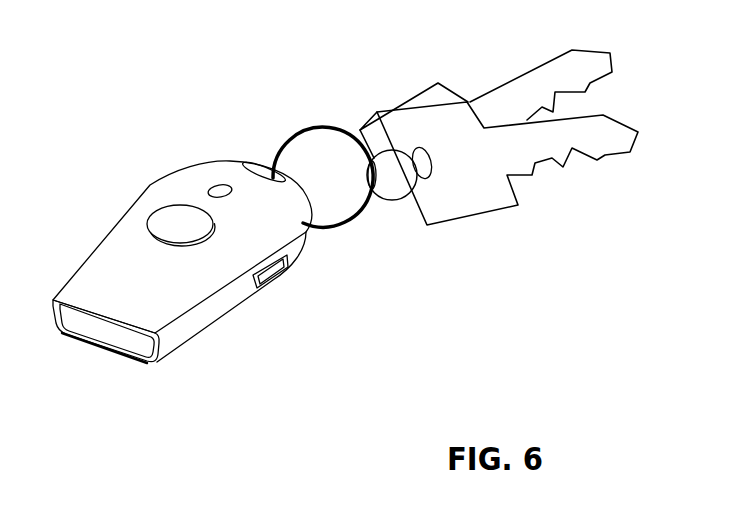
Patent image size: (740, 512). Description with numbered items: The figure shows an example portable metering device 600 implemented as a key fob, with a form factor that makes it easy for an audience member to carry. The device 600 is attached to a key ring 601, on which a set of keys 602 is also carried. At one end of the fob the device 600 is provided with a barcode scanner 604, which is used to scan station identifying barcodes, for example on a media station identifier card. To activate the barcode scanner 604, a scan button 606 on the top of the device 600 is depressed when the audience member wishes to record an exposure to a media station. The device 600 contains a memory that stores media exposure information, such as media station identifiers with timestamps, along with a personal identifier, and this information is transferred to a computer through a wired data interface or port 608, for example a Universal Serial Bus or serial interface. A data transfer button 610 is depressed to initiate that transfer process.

The portable metering device 600 is at (97, 250).
The key ring 601 is at (307, 135).
The set of keys 602 is at (485, 202).
The barcode scanner 604 is at (117, 338).
The scan button 606 is at (162, 207).
The data interface or port 608 is at (286, 268).
The data transfer button 610 is at (215, 186).